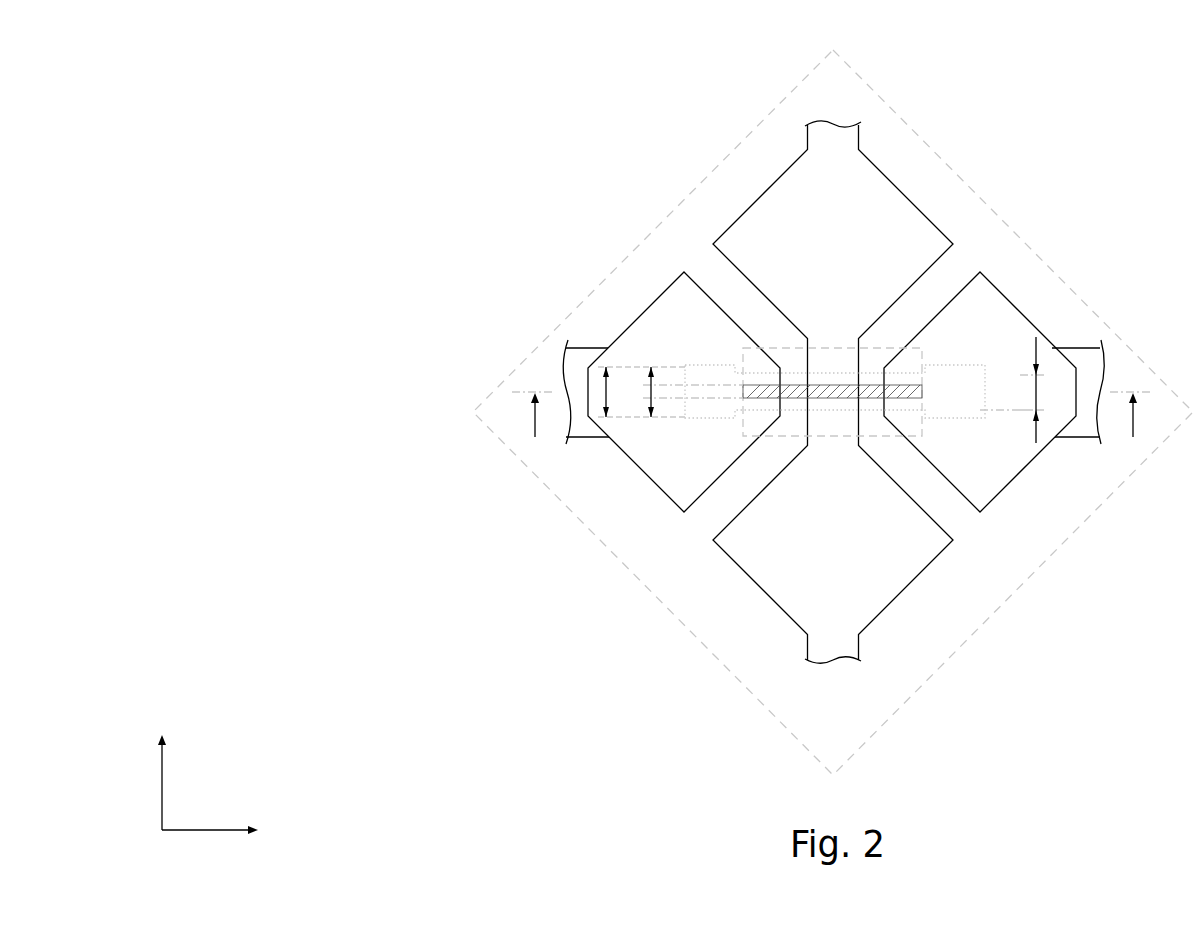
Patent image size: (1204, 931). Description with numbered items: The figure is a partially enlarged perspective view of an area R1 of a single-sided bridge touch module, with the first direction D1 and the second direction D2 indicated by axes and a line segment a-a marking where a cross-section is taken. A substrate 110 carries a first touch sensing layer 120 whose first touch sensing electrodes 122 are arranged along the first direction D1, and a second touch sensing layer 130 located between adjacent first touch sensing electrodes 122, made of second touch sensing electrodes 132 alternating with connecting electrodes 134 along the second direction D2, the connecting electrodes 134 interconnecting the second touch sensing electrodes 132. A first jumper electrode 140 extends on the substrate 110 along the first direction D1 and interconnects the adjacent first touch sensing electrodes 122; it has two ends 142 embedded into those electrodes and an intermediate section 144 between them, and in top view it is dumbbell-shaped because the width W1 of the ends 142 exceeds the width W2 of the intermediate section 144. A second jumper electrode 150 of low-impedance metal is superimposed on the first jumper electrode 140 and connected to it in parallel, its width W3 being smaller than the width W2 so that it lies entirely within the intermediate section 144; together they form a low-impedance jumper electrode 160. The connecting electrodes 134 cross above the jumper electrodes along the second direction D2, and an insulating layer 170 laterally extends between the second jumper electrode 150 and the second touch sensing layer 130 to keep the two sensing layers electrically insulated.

The substrate 110 is at (643, 566).
The first touch sensing layer 120 is at (864, 377).
The first touch sensing electrode 122 is at (1018, 330).
The second touch sensing layer 130 is at (887, 381).
The second touch sensing electrode 132 is at (926, 229).
The connecting electrode 134 is at (850, 363).
The first jumper electrode 140 is at (902, 515).
The end 142 is at (958, 400).
The intermediate section 144 is at (907, 403).
The second jumper electrode 150 is at (833, 397).
The jumper electrode 160 is at (1095, 663).
The insulating layer 170 is at (790, 350).
The width of two ends W1 is at (605, 392).
The width of intermediate section W2 is at (1037, 393).
The width of second jumper electrode W3 is at (652, 393).
The line segment a- a is at (832, 425).
The area R1 is at (306, 56).
The first direction D1 is at (232, 829).
The second direction D2 is at (162, 765).